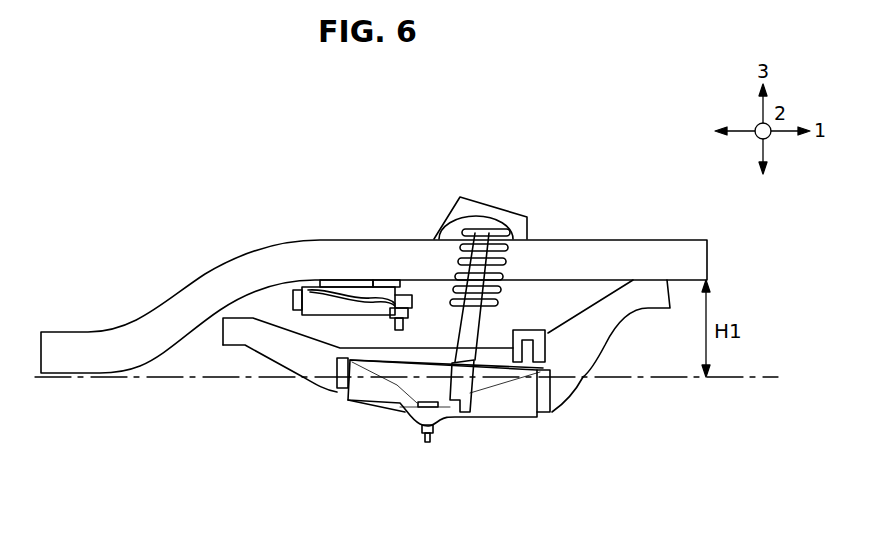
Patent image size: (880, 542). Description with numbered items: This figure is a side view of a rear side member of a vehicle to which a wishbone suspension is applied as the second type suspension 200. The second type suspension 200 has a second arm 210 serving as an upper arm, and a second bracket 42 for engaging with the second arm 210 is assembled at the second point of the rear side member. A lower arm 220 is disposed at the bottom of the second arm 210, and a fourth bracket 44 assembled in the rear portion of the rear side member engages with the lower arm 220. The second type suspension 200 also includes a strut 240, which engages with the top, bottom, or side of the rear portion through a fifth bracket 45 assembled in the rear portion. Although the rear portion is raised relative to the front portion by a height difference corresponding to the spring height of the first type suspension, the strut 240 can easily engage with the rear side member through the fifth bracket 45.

The second bracket 42 is at (395, 290).
The fourth bracket 44 is at (265, 347).
The fifth bracket 45 is at (468, 207).
The second type suspension 200 is at (493, 430).
The second arm 210 is at (310, 300).
The lower arm 220 is at (377, 398).
The strut 240 is at (508, 270).